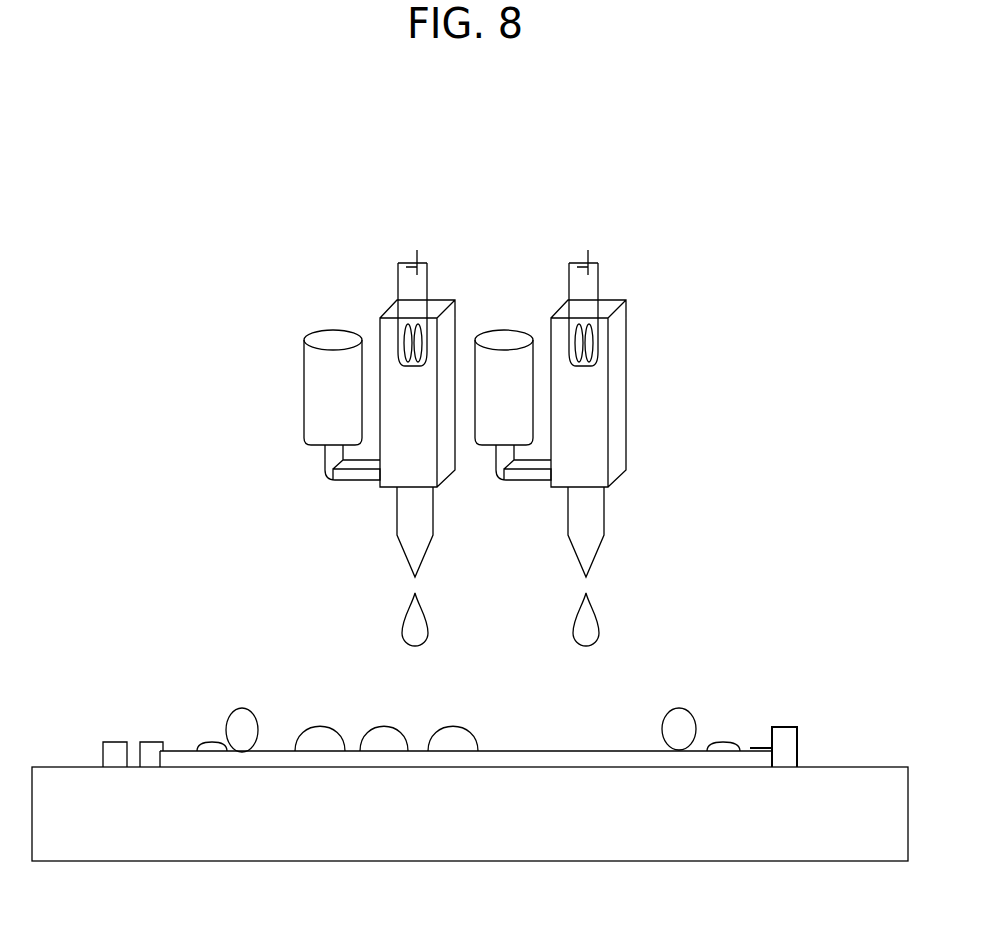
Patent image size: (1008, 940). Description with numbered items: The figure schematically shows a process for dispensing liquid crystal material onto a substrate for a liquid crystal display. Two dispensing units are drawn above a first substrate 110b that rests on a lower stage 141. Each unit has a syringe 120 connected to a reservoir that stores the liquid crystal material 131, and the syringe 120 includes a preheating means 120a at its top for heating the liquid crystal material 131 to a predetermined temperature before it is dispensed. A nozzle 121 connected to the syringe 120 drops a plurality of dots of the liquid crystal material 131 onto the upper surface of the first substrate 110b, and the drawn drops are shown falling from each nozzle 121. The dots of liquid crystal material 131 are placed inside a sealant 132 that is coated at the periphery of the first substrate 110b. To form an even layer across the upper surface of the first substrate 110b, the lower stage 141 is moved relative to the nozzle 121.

The syringe 120 is at (609, 388).
The preheating means 120a is at (599, 279).
The nozzle 121 is at (598, 520).
The liquid crystal material 131 is at (319, 736).
The sealant 132 is at (679, 718).
The first substrate 110b is at (422, 758).
The lower stage 141 is at (856, 776).